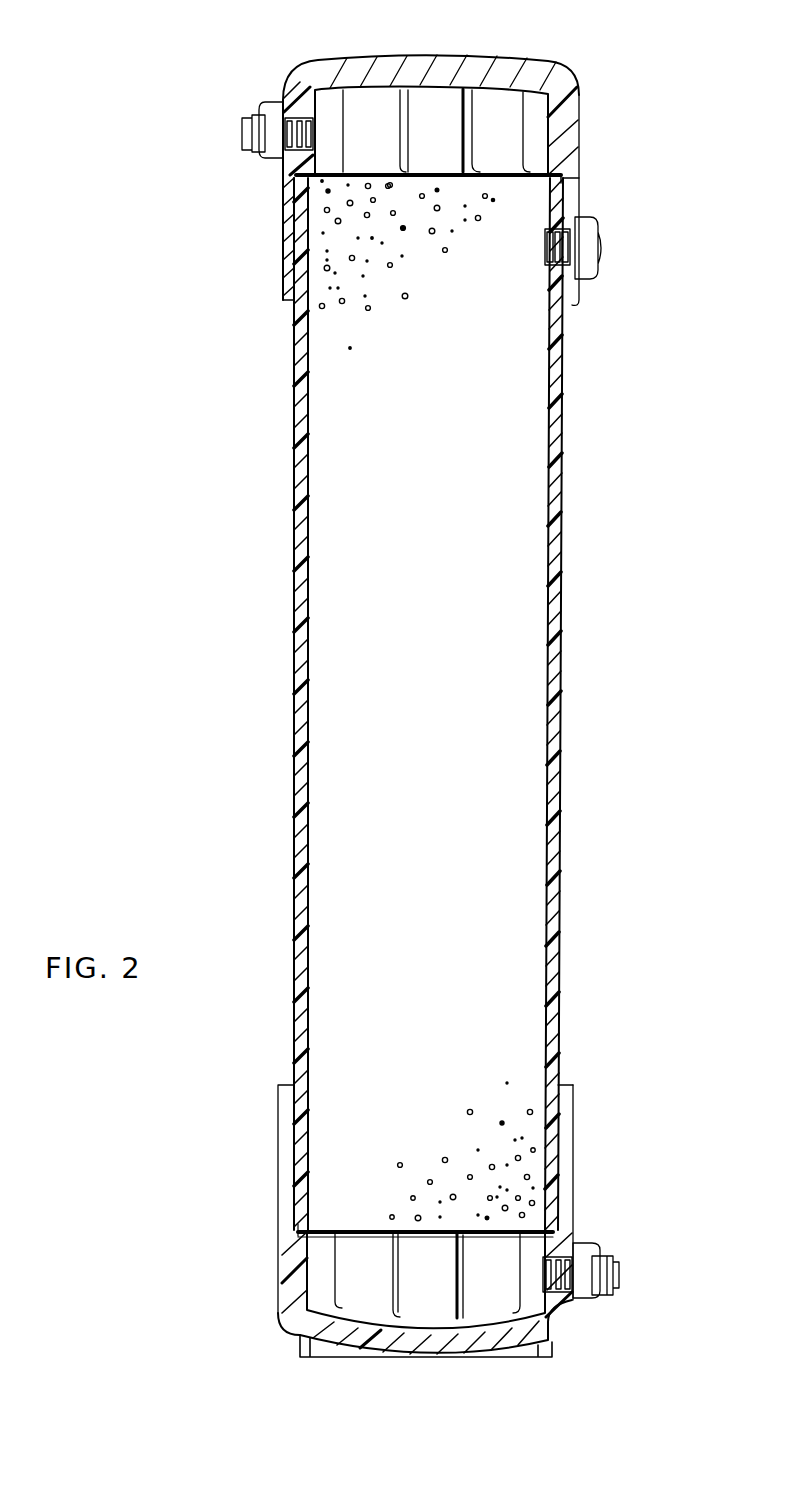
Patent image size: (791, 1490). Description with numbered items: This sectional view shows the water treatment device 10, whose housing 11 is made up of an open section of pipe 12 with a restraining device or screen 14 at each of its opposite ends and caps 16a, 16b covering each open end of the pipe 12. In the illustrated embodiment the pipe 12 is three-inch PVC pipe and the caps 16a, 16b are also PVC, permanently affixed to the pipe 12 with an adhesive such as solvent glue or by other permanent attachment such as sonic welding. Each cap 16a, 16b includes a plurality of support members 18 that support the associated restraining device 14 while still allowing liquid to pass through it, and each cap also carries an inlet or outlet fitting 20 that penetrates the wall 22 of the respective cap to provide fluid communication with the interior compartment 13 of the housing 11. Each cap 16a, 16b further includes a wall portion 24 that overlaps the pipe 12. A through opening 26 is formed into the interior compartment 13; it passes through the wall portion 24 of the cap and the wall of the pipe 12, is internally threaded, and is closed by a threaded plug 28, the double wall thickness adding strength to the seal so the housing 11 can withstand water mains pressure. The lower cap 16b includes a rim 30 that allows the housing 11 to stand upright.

The water treatment device 10 is at (553, 64).
The housing 11 is at (563, 424).
The pipe 12 is at (563, 650).
The interior compartment 13 is at (432, 612).
The restraining device 14 is at (503, 176).
The cap 16a is at (578, 118).
The cap 16b is at (575, 1322).
The support members 18 is at (409, 118).
The inlet or outlet fitting 20 is at (267, 105).
The wall 22 is at (329, 66).
The wall portion 24 is at (576, 305).
The through opening 26 is at (574, 262).
The threaded plug 28 is at (598, 222).
The rim 30 is at (300, 1348).